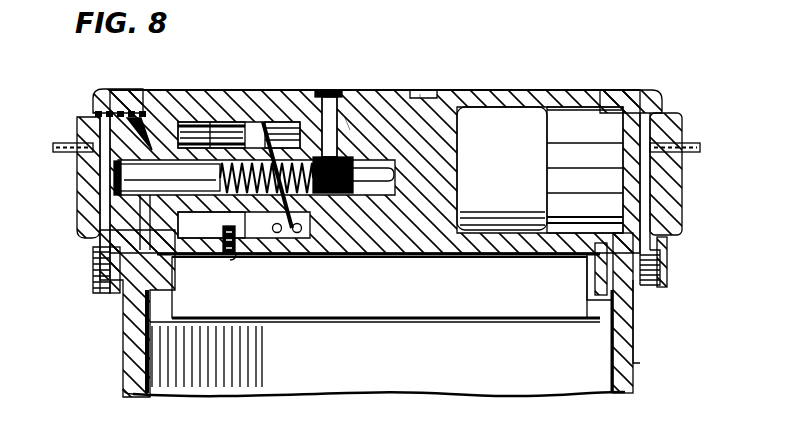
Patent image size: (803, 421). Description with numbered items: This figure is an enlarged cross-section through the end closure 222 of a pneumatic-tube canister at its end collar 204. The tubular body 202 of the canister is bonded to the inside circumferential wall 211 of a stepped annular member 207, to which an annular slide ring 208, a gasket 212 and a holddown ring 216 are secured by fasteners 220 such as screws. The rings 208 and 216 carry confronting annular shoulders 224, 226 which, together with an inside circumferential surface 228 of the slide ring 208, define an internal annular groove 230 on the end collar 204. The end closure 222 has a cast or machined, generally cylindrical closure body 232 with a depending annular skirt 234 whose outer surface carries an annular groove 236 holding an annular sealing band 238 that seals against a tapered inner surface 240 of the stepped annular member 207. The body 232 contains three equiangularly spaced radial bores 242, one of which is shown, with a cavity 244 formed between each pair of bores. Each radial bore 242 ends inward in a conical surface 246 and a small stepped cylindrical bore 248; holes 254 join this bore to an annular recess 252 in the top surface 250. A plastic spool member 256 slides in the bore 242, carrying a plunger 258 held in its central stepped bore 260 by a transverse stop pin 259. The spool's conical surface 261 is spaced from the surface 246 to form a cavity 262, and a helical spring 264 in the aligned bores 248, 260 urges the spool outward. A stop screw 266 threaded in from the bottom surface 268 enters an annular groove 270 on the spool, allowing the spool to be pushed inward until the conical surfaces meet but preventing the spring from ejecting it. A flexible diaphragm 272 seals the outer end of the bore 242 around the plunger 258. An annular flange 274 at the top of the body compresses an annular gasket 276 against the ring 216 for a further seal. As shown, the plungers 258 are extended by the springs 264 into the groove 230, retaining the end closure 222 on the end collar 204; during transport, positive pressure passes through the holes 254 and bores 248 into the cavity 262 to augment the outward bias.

The tubular body 202 is at (437, 352).
The end collar 204 is at (735, 253).
The stepped annular member 207 is at (632, 301).
The annular slide ring 208 is at (670, 189).
The inside circumferential wall 211 is at (631, 338).
The gasket 212 is at (696, 156).
The ring 216 is at (670, 129).
The fasteners 220 is at (676, 216).
The end closure 222 is at (390, 26).
The annular shoulder 224 is at (557, 193).
The annular shoulder 226 is at (557, 168).
The inside circumferential surface 228 is at (628, 188).
The internal annular groove 230 is at (580, 168).
The closure body 232 is at (447, 207).
The annular skirt 234 is at (337, 314).
The annular groove 236 is at (575, 263).
The annular sealing band 238 is at (170, 301).
The tapered inner surface 240 is at (103, 213).
The radial bore 242 is at (233, 262).
The cavity 244 is at (507, 145).
The conical surface 246 is at (379, 271).
The small stepped cylindrical bore 248 is at (335, 196).
The top surface 250 is at (547, 91).
The annular recess 252 is at (338, 93).
The holes 254 is at (342, 121).
The spool member 256 is at (200, 122).
The plunger 258 is at (118, 172).
The stop pin 259 is at (230, 122).
The central stepped bore 260 is at (302, 228).
The conical surface 261 is at (276, 122).
The cavity 262 is at (322, 99).
The helical spring 264 is at (357, 168).
The stop screw 266 is at (232, 256).
The bottom surface 268 is at (417, 258).
The annular groove 270 is at (211, 249).
The flexible diaphragm 272 is at (153, 97).
The annular flange 274 is at (107, 98).
The annular gasket 276 is at (93, 112).